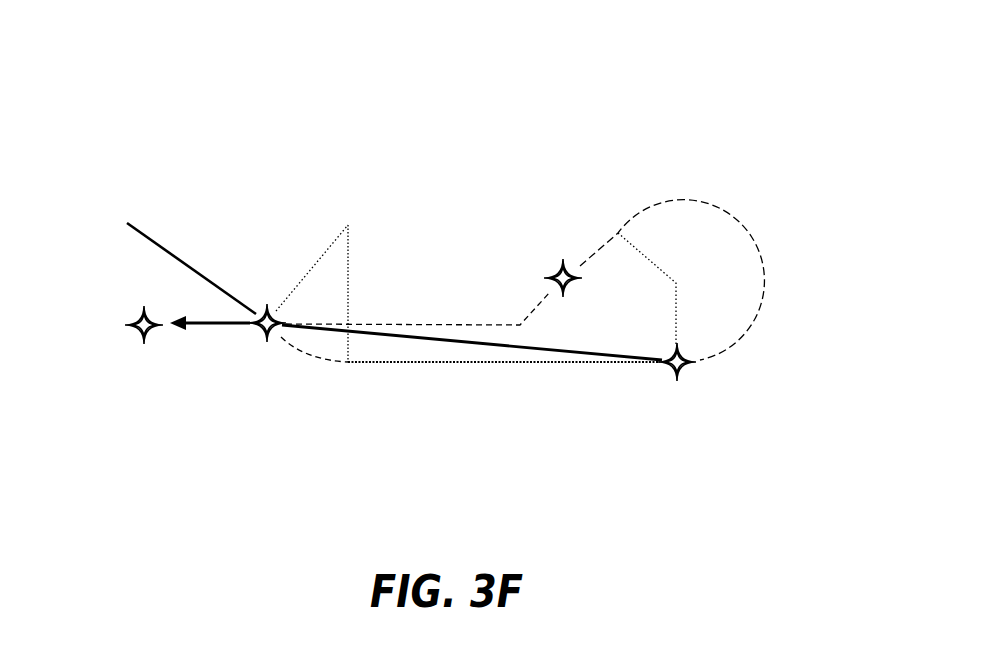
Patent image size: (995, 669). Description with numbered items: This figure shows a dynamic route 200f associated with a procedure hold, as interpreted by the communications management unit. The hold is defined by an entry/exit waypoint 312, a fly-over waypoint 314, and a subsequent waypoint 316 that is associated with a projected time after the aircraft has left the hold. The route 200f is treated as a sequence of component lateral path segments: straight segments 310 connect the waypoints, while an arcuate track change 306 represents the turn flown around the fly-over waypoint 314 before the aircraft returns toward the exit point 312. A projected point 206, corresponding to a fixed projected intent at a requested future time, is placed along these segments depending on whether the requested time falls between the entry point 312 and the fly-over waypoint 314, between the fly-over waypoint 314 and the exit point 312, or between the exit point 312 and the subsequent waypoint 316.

The dynamic route 200f is at (122, 98).
The projected point 206 is at (558, 266).
The arcuate track change 306 is at (743, 230).
The straight segment 310 is at (437, 325).
The entry/exit waypoint 312 is at (260, 313).
The fly-over waypoint 314 is at (680, 377).
The subsequent waypoint 316 is at (147, 342).